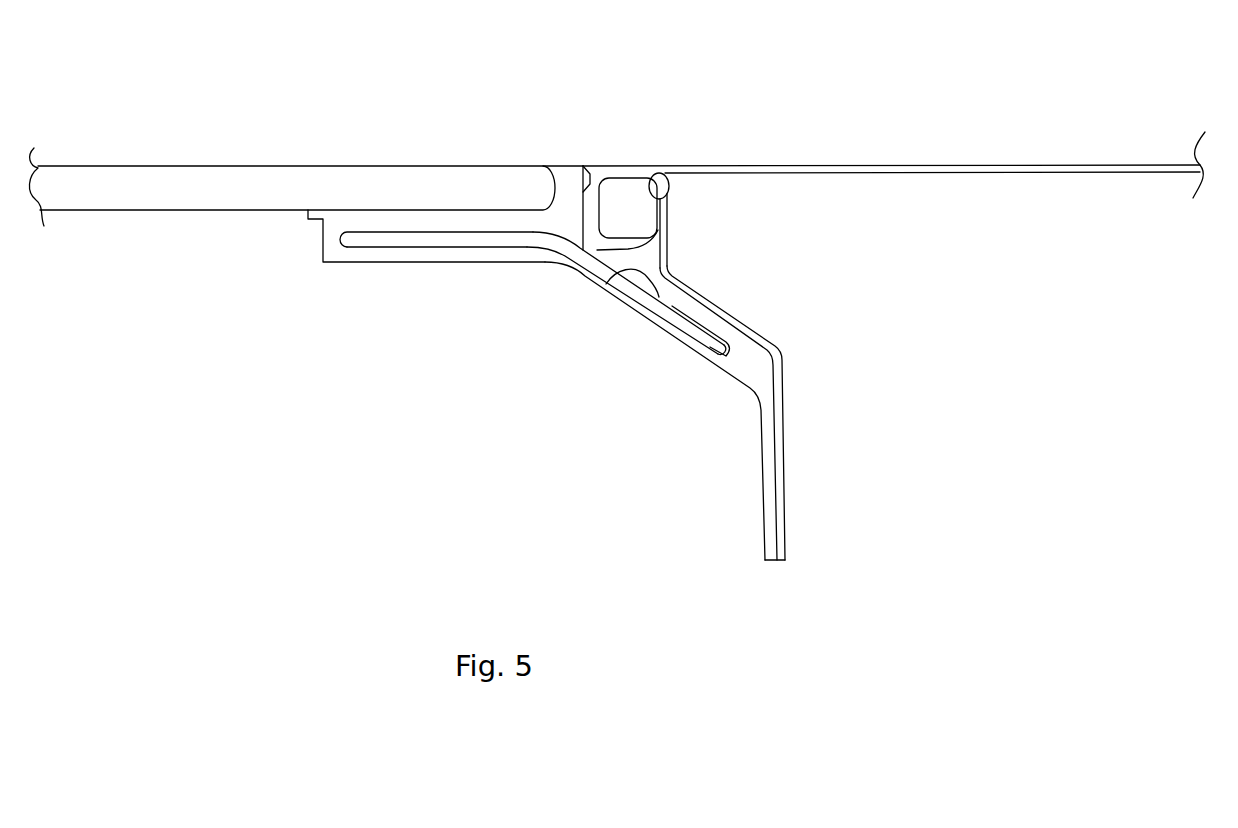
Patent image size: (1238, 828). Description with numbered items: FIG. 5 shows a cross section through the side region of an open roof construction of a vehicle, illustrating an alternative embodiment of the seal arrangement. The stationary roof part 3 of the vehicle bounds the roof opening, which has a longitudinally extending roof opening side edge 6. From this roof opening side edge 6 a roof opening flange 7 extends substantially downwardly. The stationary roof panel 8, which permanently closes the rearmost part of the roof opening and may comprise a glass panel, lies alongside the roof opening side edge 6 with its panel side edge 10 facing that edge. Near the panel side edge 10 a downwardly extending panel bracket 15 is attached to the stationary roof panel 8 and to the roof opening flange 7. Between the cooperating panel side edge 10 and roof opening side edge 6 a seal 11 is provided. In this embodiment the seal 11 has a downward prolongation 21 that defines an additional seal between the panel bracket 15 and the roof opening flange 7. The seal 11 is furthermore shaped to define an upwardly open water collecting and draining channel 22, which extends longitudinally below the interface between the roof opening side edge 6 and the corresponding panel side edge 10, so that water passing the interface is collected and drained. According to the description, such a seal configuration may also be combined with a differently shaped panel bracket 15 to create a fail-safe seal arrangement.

The stationary roof part 3 is at (943, 165).
The roof opening side edge 6 is at (655, 172).
The roof opening flange 7 is at (740, 327).
The stationary roof panel 8 is at (332, 178).
The panel side edge 10 is at (583, 166).
The seal 11 is at (622, 166).
The panel bracket 15 is at (638, 313).
The downward prolongation 21 is at (690, 298).
The water collecting and draining channel 22 is at (606, 284).